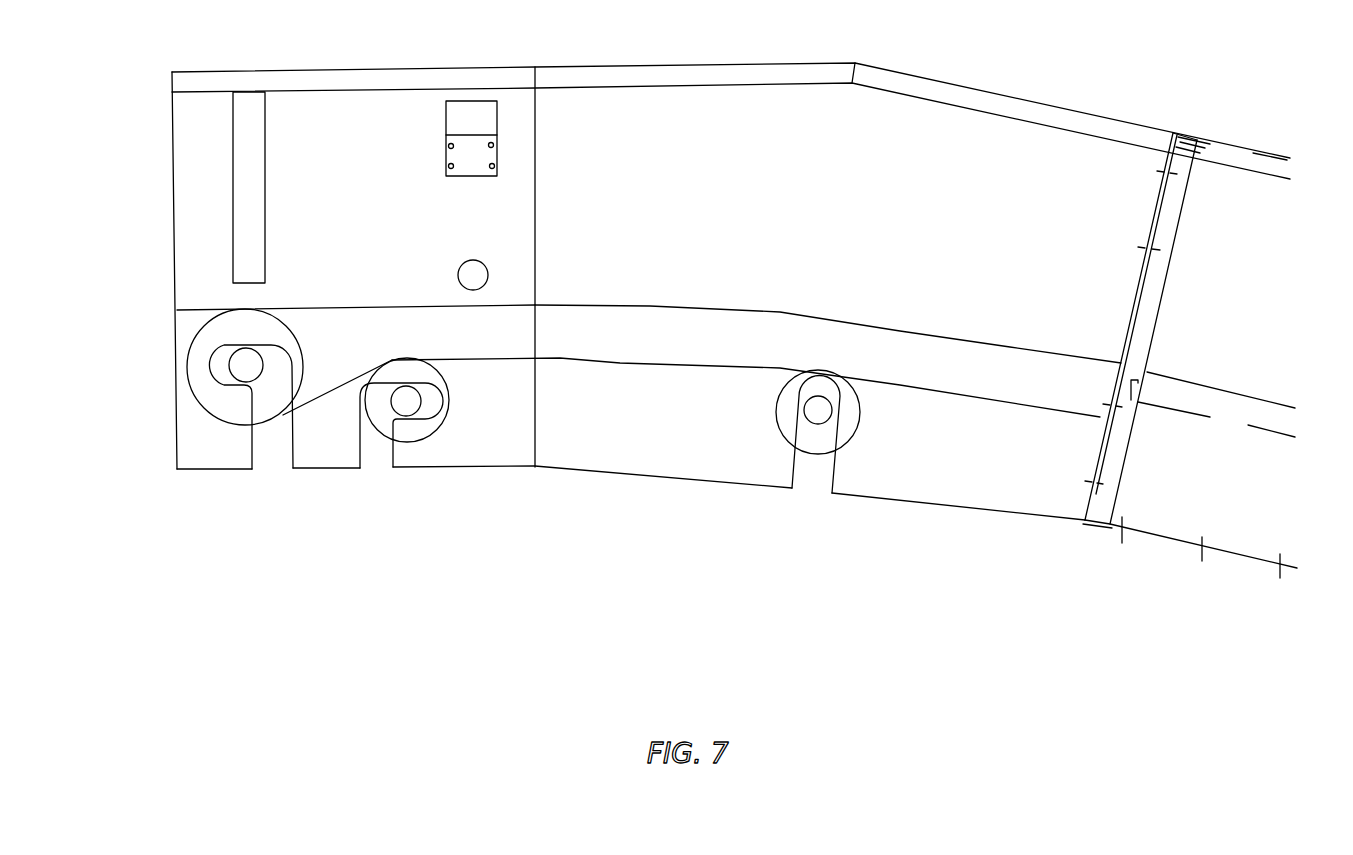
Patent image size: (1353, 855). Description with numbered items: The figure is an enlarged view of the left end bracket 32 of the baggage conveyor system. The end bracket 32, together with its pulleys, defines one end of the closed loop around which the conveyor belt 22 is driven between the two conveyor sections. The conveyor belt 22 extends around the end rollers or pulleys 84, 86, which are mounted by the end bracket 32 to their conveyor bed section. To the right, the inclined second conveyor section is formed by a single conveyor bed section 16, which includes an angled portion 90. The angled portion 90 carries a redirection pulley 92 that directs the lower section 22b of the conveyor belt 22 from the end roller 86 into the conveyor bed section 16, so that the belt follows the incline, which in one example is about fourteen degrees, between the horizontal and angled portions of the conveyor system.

The conveyor bed section 16 is at (1245, 148).
The conveyor belt 22 is at (843, 354).
The lower section of conveyor belt 22b is at (650, 368).
The end bracket 32 is at (167, 388).
The end roller or pulley 84 is at (222, 403).
The end roller or pulley 86 is at (413, 428).
The angled portion 90 is at (972, 108).
The redirection pulley 92 is at (813, 445).